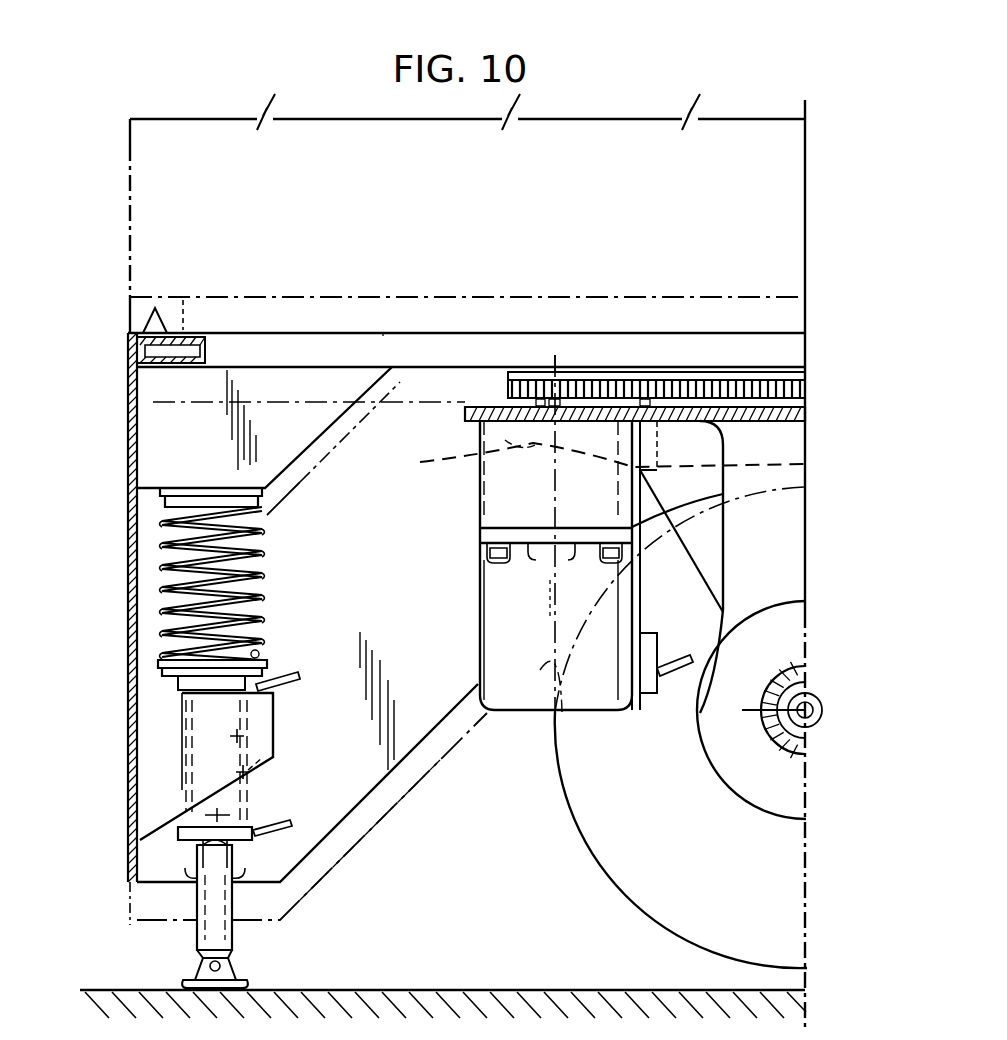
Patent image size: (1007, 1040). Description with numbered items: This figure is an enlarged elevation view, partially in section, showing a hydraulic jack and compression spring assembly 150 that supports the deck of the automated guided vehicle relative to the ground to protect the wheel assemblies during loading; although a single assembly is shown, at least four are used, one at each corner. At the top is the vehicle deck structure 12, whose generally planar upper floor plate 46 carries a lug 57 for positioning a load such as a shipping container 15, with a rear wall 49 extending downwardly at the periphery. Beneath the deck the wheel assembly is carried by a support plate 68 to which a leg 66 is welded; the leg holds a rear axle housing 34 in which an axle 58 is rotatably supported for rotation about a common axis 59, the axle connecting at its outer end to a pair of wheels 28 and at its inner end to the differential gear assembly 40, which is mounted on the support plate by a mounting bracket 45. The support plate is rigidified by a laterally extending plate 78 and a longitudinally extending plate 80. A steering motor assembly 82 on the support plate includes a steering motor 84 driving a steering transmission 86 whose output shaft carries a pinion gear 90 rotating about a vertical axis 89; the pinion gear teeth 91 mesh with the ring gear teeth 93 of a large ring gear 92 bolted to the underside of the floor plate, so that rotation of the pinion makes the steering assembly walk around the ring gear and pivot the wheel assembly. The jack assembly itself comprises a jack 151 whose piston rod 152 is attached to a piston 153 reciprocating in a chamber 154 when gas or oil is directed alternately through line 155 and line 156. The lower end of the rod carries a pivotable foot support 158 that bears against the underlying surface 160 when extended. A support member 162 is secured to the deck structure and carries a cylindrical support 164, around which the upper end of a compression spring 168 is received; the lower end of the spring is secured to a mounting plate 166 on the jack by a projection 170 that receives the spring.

The vehicle deck structure 12 is at (316, 328).
The shipping container 15 is at (150, 174).
The pair of wheels 28 is at (672, 887).
The rear axle housing 34 is at (795, 663).
The differential gear assembly 40 is at (770, 808).
The mounting bracket 45 is at (778, 568).
The upper floor plate 46 is at (383, 333).
The rear wall 49 is at (130, 425).
The lug 57 is at (160, 322).
The axle 58 is at (807, 700).
The common axis 59 is at (807, 712).
The leg 66 is at (710, 451).
The support plate 68 is at (805, 408).
The plate 78 is at (805, 466).
The plate 80 is at (591, 455).
The steering motor assembly 82 is at (448, 568).
The steering motor 84 is at (540, 668).
The steering transmission 86 is at (497, 489).
The vertical axis 89 is at (553, 597).
The pinion gear 90 is at (511, 372).
The pinion gear teeth 91 is at (585, 385).
The ring gear 92 is at (704, 370).
The ring gear teeth 93 is at (775, 383).
The hydraulic jack and compression spring assembly 150 is at (326, 685).
The jack 151 is at (160, 770).
The piston rod 152 is at (195, 907).
The piston 153 is at (262, 771).
The chamber 154 is at (250, 737).
The line 155 is at (280, 678).
The line 156 is at (268, 824).
The pivotable foot support 158 is at (232, 968).
The underlying surface 160 is at (398, 988).
The support member 162 is at (165, 463).
The cylindrical support 164 is at (170, 510).
The mounting plate 166 is at (190, 690).
The compression spring 168 is at (258, 557).
The projection 170 is at (185, 642).